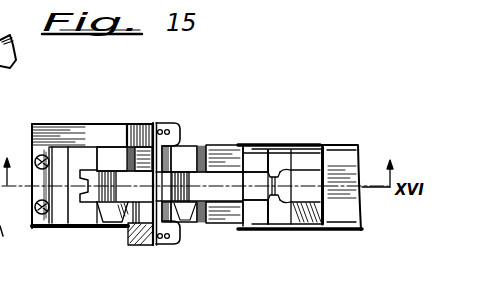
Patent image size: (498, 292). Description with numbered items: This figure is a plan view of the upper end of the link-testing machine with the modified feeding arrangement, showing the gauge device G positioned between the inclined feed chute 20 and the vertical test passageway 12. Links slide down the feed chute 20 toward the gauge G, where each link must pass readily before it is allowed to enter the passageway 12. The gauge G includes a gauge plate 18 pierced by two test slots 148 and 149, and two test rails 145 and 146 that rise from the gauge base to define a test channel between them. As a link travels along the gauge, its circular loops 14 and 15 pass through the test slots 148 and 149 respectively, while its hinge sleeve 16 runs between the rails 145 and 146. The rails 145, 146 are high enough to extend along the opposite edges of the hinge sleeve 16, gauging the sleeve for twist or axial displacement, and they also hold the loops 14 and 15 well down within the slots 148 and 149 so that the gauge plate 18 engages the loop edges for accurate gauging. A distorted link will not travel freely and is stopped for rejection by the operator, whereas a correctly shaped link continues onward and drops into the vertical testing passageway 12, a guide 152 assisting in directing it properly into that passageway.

The vertical test passageway 12 is at (80, 218).
The guide 152 is at (63, 147).
The gauge device G is at (144, 128).
The gauge plate 18 is at (170, 130).
The test slot 148 is at (172, 150).
The circular loop 14 is at (187, 158).
The test rail 145 is at (233, 147).
The hinge sleeve 16 is at (250, 183).
The feed chute 20 is at (342, 160).
The test slot 149 is at (160, 220).
The circular loop 15 is at (185, 211).
The test rail 146 is at (218, 220).